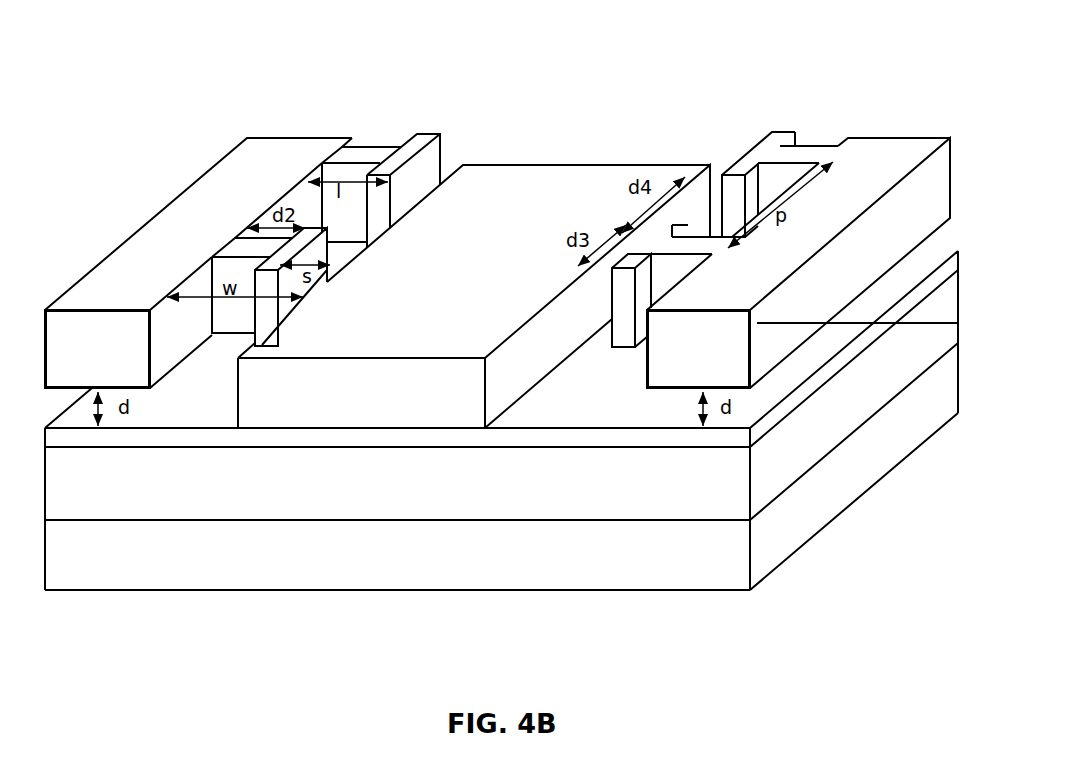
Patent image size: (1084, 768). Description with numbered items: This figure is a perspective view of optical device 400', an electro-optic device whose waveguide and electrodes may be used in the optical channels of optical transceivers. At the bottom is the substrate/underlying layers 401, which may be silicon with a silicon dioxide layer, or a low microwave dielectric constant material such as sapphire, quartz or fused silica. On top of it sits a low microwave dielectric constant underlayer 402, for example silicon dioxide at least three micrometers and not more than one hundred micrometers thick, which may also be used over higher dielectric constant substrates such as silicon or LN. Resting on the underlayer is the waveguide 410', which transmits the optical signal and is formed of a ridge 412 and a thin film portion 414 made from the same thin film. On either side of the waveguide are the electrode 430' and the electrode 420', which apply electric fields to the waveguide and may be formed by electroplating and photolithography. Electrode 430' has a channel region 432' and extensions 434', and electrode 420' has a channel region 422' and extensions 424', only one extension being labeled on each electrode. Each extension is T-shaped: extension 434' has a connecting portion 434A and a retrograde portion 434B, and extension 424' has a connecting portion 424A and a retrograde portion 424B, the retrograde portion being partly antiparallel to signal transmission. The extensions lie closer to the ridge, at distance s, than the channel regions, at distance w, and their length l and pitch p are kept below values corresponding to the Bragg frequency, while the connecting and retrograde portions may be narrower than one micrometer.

The optical device 400' is at (501, 297).
The electrode 430' is at (305, 235).
The channel region 432' is at (97, 349).
The extensions 434' is at (389, 214).
The connecting portion 434A is at (367, 146).
The retrograde portion 434B is at (447, 148).
The electrode 420' is at (775, 234).
The channel region 422' is at (698, 349).
The extensions 424' is at (716, 214).
The connecting portion 424A is at (796, 153).
The retrograde portion 424B is at (725, 164).
The waveguide 410' is at (474, 296).
The low microwave dielectric constant underlayer 402 is at (397, 483).
The substrate/underlying layers 401 is at (630, 564).
The thin film portion 414 is at (96, 462).
The ridge 412 is at (425, 414).